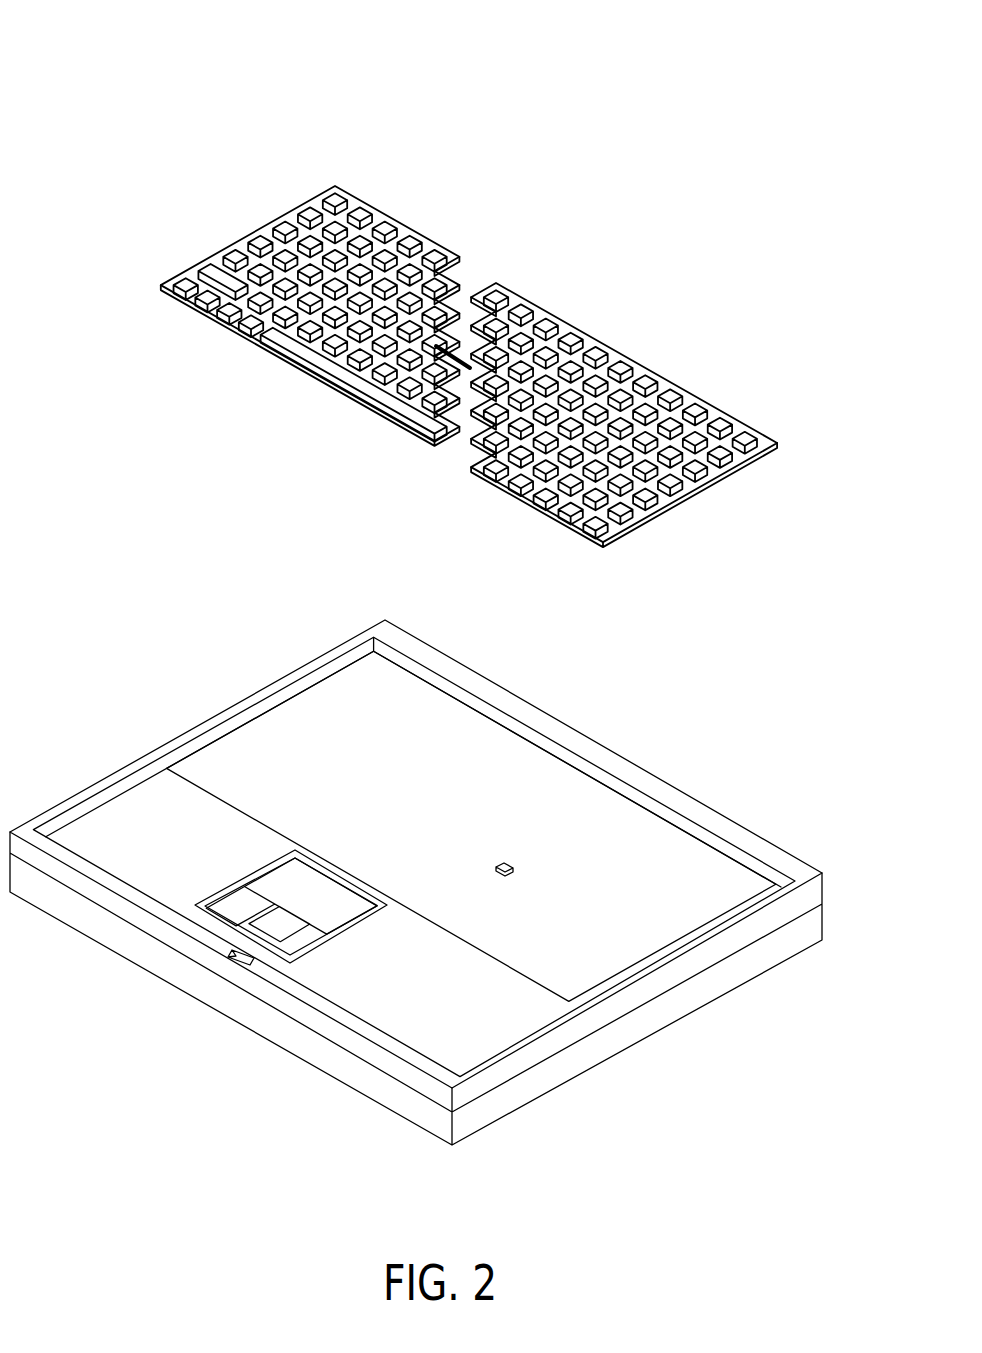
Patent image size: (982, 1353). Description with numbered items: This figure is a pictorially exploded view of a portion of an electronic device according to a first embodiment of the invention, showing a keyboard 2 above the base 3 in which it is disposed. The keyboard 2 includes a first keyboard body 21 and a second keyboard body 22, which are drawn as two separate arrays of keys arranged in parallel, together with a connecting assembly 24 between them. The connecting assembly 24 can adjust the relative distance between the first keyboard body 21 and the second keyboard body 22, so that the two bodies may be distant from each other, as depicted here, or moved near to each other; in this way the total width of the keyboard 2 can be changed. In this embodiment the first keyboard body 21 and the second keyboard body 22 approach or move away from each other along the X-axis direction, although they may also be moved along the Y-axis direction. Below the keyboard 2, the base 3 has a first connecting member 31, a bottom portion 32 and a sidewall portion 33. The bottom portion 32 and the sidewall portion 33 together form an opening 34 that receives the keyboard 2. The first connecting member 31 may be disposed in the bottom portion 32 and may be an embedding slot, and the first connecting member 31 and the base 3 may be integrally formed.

The keyboard 2 is at (727, 31).
The first keyboard body 21 is at (287, 204).
The second keyboard body 22 is at (733, 488).
The connecting assembly 24 is at (462, 345).
The base 3 is at (711, 1018).
The first connecting member 31 is at (512, 868).
The bottom portion 32 is at (495, 755).
The sidewall portion 33 is at (280, 716).
The opening 34 is at (722, 888).